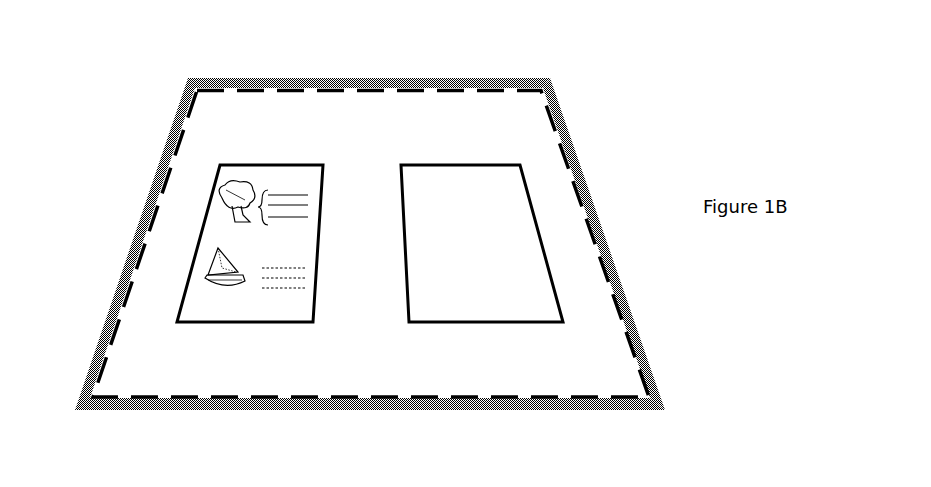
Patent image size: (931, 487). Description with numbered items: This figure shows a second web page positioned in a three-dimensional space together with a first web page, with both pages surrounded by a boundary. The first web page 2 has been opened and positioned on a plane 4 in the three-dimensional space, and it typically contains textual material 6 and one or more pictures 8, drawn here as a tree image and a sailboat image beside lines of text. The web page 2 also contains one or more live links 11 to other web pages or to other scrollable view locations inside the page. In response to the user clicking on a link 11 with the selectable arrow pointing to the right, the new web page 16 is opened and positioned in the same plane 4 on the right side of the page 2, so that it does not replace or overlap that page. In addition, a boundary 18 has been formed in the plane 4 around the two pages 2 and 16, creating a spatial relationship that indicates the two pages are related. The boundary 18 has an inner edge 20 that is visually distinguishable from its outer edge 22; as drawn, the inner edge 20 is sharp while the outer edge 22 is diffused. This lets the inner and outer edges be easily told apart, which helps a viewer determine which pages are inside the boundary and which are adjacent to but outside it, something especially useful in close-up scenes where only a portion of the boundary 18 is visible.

The web page 2 is at (227, 162).
The plane 4 is at (680, 270).
The textual material 6 is at (213, 182).
The pictures 8 is at (220, 167).
The live links 11 is at (278, 288).
The new web page 16 is at (470, 160).
The boundary 18 is at (583, 163).
The inner edge 20 is at (355, 78).
The outer edge 22 is at (450, 78).